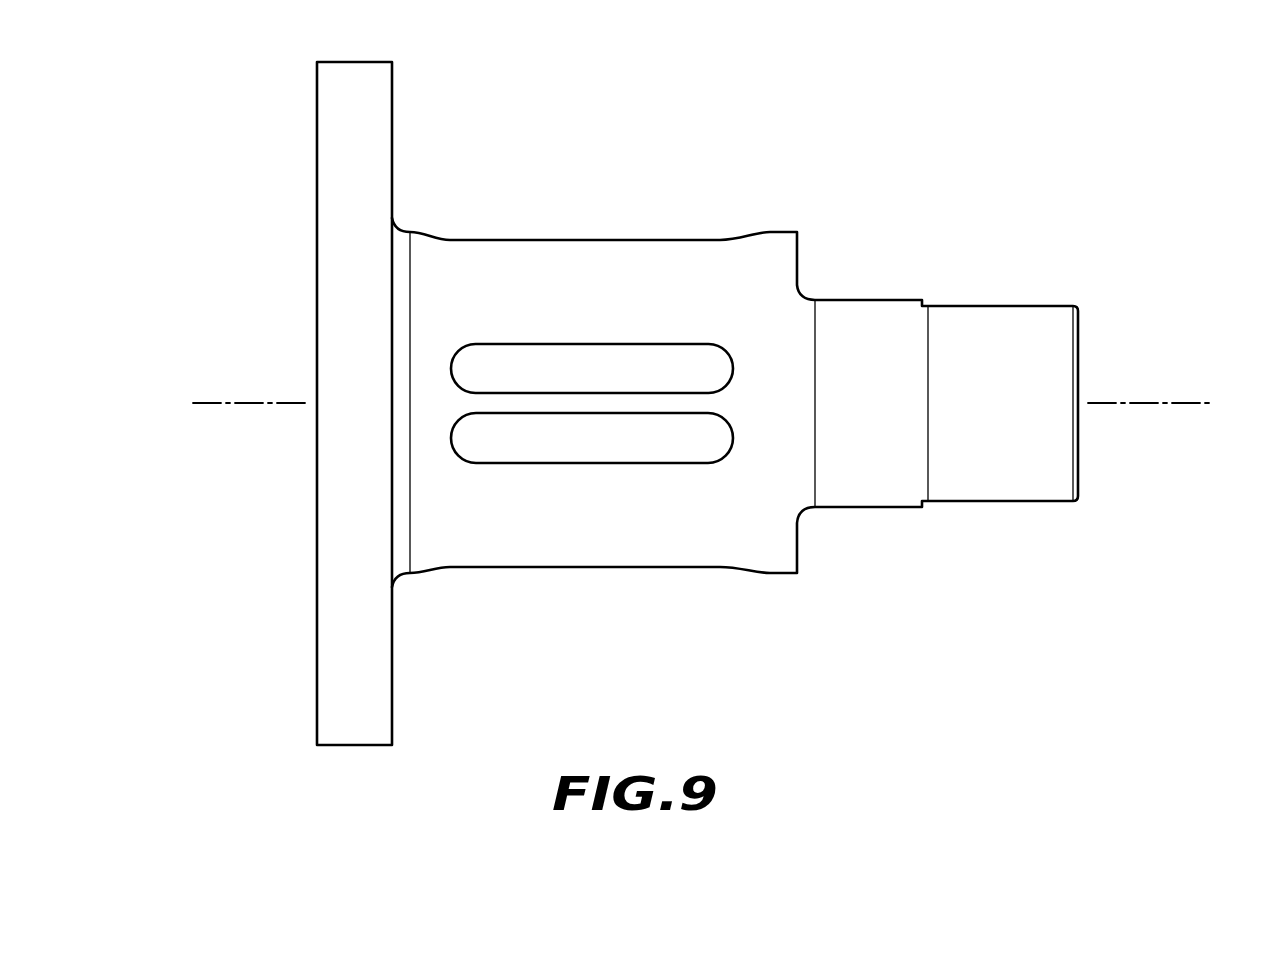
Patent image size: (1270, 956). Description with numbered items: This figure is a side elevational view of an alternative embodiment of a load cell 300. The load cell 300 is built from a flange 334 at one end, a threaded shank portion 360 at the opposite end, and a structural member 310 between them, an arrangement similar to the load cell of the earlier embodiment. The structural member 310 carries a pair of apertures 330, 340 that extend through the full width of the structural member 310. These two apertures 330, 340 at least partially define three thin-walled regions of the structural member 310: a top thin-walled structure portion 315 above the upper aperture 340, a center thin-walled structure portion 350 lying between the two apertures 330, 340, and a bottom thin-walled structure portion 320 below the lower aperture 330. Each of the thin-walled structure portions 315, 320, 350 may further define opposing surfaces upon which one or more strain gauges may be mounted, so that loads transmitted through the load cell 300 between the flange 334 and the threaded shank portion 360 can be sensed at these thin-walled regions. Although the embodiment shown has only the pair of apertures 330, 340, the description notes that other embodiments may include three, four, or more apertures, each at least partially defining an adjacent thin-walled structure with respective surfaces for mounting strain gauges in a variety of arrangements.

The load cell 300 is at (705, 403).
The structural member 310 is at (655, 260).
The top thin-walled structure portion 315 is at (600, 290).
The bottom thin-walled structure portion 320 is at (686, 545).
The aperture 330 is at (587, 437).
The flange 334 is at (347, 140).
The aperture 340 is at (596, 366).
The center thin-walled structure portion 350 is at (593, 403).
The threaded shank portion 360 is at (1065, 343).